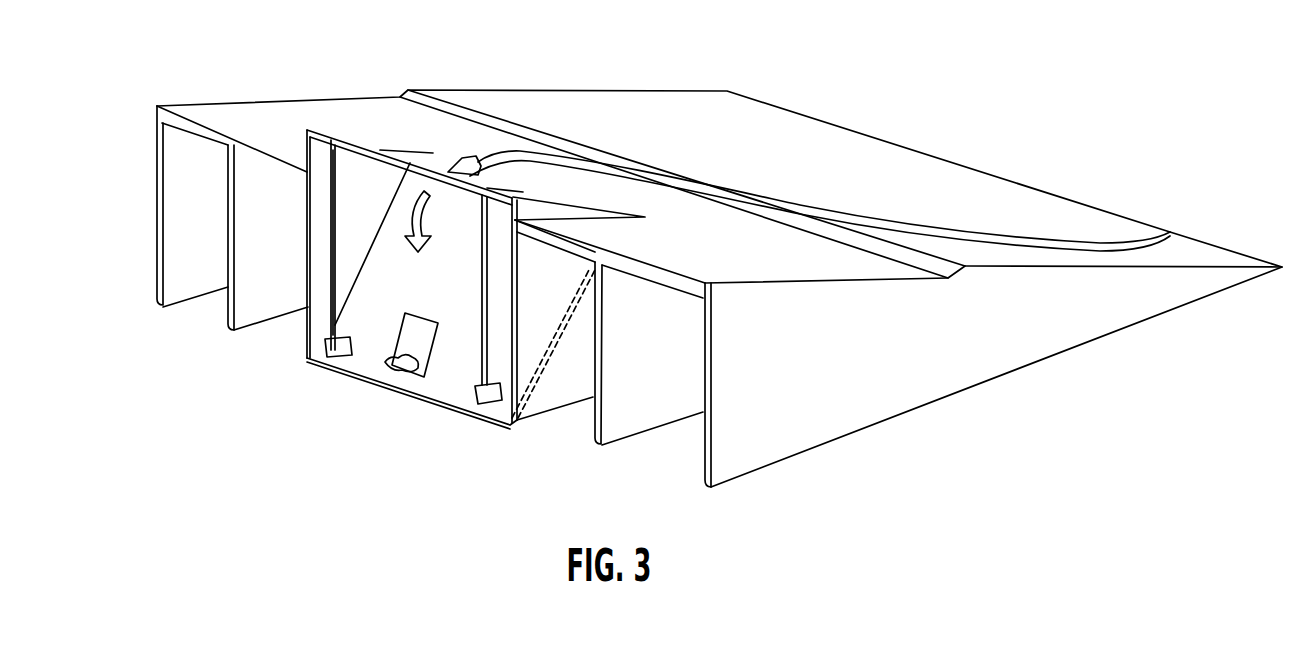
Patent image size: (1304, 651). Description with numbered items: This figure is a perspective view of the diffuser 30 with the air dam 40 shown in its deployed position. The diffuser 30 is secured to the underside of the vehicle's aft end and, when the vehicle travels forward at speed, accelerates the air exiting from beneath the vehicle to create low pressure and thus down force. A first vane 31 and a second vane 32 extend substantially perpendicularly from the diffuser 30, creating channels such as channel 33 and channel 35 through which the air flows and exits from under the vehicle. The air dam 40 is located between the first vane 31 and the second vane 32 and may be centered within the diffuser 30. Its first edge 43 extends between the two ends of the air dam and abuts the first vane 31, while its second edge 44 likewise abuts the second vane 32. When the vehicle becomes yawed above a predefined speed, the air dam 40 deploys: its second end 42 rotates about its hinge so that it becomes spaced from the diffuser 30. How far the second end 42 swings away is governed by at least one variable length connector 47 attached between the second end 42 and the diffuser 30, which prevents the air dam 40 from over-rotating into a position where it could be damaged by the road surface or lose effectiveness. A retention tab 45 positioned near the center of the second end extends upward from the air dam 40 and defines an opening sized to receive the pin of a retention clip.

The diffuser 30 is at (152, 104).
The first vane 31 is at (301, 183).
The second vane 32 is at (520, 352).
The channel 33 is at (252, 342).
The channel 35 is at (517, 440).
The air dam 40 is at (433, 378).
The second end 42 is at (315, 366).
The first edge 43 is at (323, 312).
The second edge 44 is at (553, 345).
The retention tab 45 is at (381, 364).
The variable length connector 47 is at (344, 184).